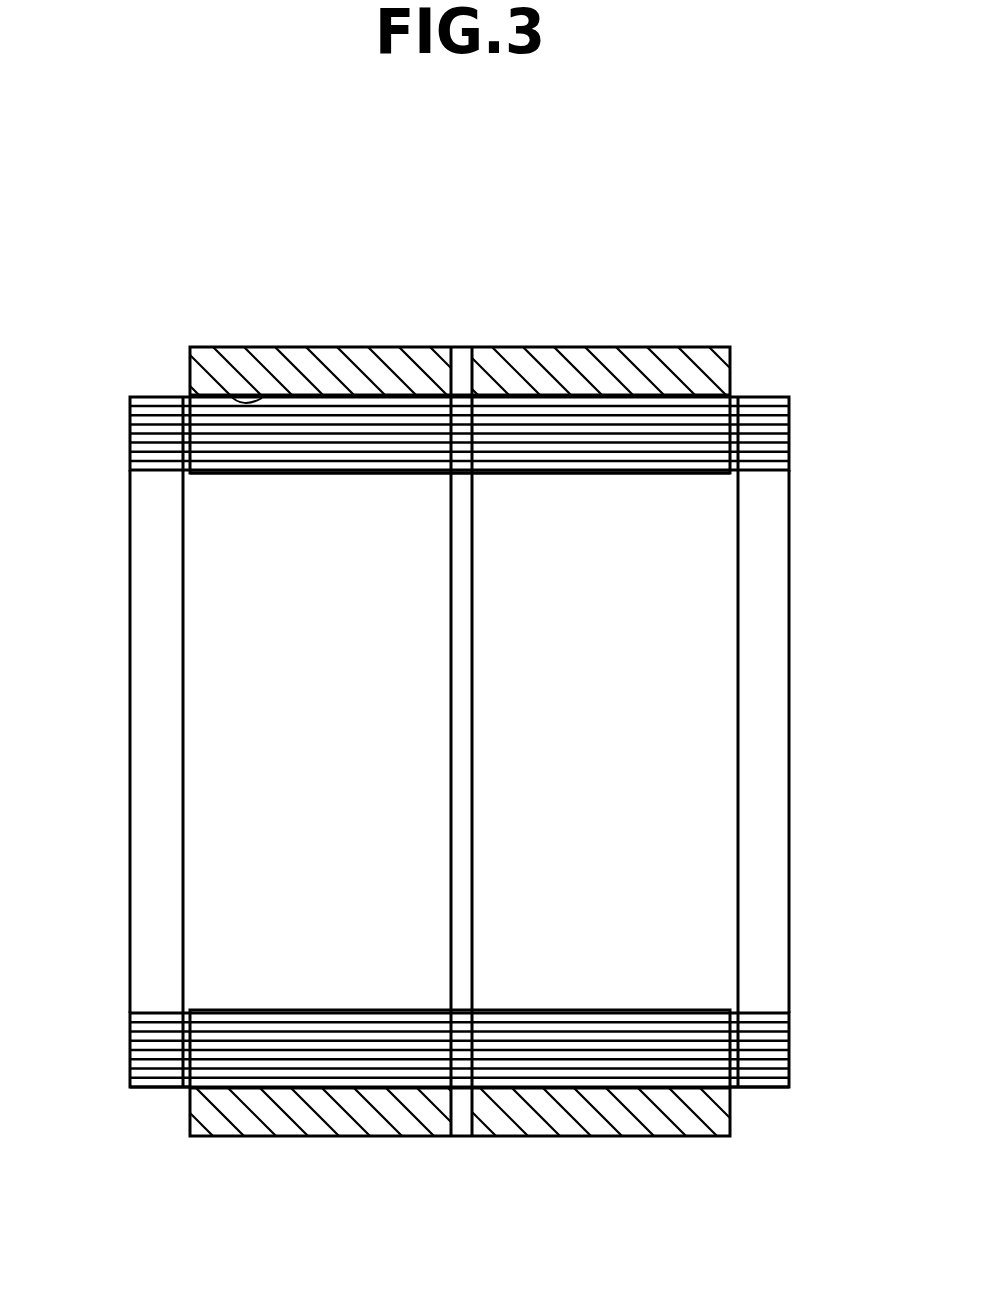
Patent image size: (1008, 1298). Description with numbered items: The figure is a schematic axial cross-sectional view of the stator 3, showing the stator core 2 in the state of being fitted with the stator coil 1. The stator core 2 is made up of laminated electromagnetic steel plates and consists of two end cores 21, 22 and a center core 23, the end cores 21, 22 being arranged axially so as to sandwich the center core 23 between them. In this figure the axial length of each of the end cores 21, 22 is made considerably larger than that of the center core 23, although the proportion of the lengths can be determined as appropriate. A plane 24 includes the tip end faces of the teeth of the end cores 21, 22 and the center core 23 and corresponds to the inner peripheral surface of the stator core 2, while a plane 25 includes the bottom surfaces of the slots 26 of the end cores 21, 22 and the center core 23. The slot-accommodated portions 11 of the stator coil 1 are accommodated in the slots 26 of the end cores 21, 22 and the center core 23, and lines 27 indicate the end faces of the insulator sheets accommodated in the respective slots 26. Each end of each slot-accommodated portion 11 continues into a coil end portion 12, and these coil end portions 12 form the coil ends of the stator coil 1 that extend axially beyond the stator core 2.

The stator coil 1 is at (140, 378).
The stator core 2 is at (378, 335).
The stator 3 is at (763, 283).
The slot-accommodated portion 11 is at (378, 443).
The coil end portion 12 is at (152, 1090).
The end core 21 is at (296, 357).
The end core 22 is at (603, 355).
The center core 23 is at (465, 347).
The plane including tip end faces of the teeth 24 is at (243, 475).
The plane including bottom surfaces of slots 25 is at (230, 395).
The slot 26 is at (421, 347).
The lines indicative of end faces of insulator sheets 27 is at (183, 785).